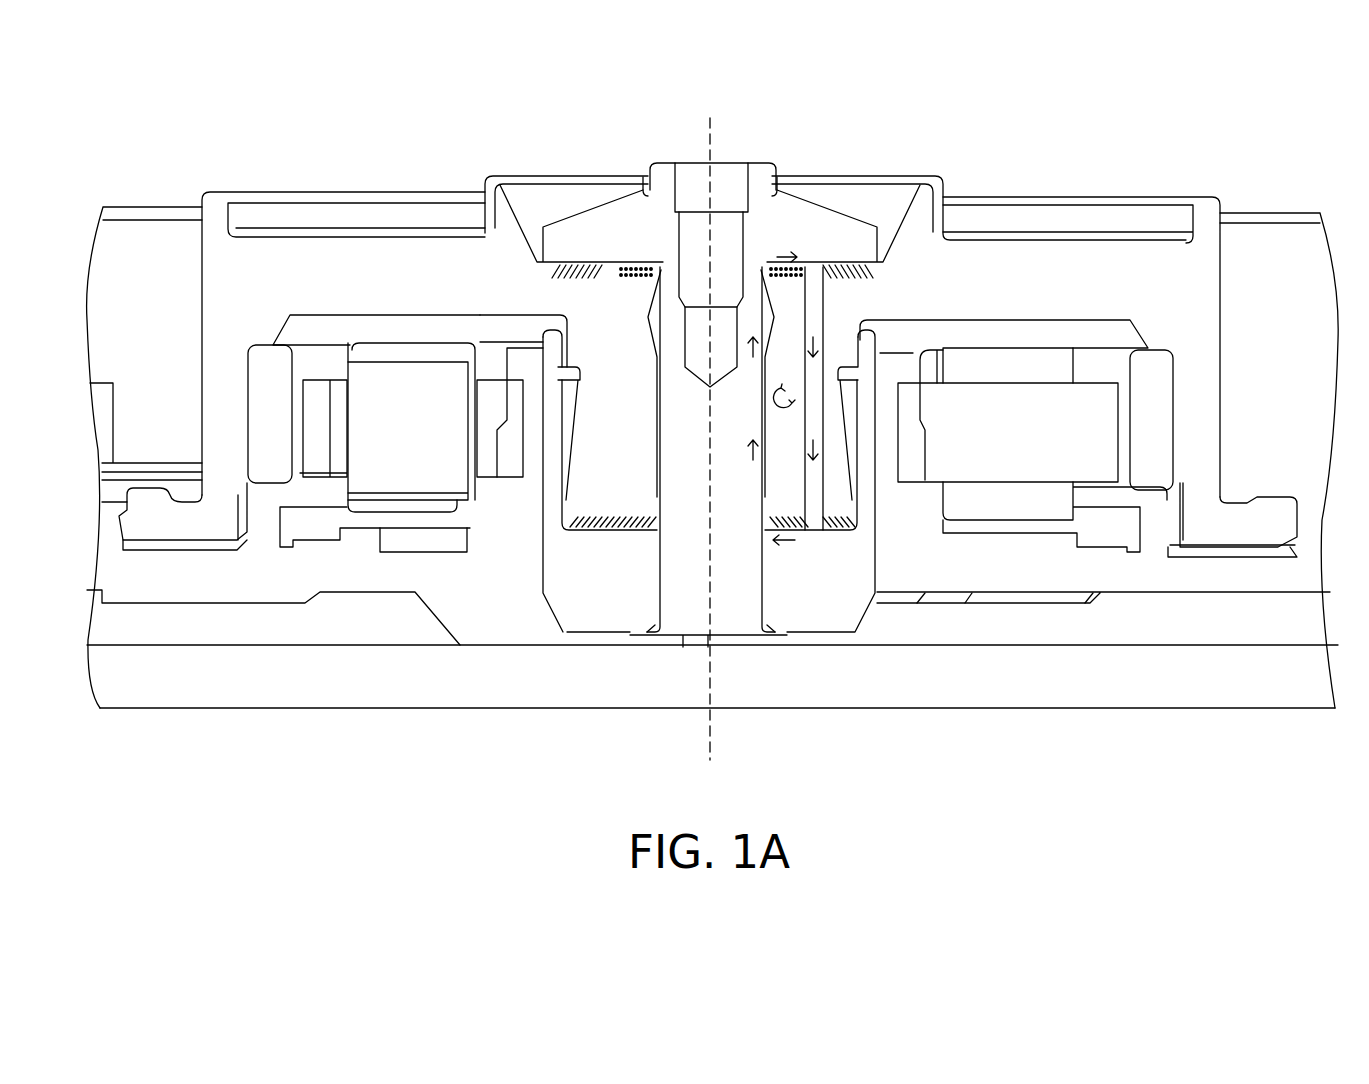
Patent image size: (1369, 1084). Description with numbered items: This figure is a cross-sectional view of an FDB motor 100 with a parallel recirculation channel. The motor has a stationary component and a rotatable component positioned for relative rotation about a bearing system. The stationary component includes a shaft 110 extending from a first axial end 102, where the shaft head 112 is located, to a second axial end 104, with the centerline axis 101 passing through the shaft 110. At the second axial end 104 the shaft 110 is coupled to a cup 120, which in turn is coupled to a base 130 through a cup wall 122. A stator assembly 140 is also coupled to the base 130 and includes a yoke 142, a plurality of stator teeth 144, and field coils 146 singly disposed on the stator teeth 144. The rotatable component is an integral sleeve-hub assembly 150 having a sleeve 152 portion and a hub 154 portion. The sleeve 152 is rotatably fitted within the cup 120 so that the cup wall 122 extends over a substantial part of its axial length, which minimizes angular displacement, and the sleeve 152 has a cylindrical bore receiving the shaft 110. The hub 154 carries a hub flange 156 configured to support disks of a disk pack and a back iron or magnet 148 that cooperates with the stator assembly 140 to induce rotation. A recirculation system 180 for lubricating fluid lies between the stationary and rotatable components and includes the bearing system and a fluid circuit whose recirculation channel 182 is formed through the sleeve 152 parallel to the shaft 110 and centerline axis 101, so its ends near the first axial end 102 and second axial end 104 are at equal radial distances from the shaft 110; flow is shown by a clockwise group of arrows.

The FDB motor 100 is at (565, 98).
The centerline axis 101 is at (710, 143).
The first axial end 102 is at (782, 153).
The second axial end 104 is at (777, 748).
The shaft 110 is at (758, 603).
The shaft head 112 is at (642, 246).
The cup 120 is at (835, 603).
The cup wall 122 is at (562, 441).
The base 130 is at (1033, 576).
The stator assembly 140 is at (1080, 342).
The yoke 142 is at (493, 410).
The stator teeth 144 is at (1033, 444).
The field coils 146 is at (433, 441).
The back iron or magnet 148 is at (263, 377).
The sleeve-hub assembly 150 is at (534, 305).
The sleeve 152 is at (637, 450).
The hub 154 is at (268, 275).
The hub flange 156 is at (1276, 537).
The recirculation system 180 is at (800, 397).
The recirculation channel 182 is at (807, 478).